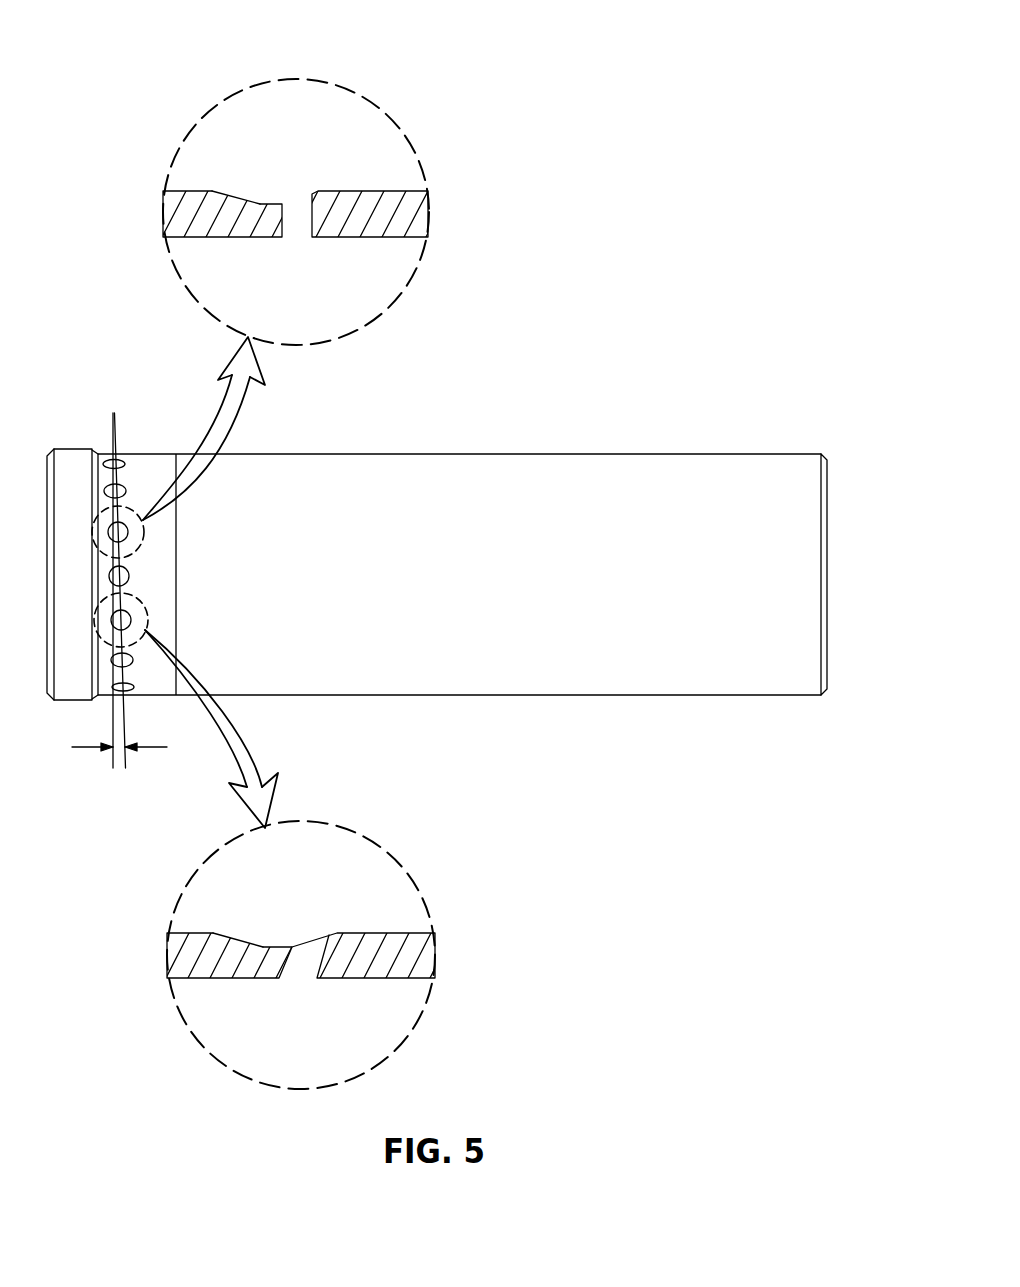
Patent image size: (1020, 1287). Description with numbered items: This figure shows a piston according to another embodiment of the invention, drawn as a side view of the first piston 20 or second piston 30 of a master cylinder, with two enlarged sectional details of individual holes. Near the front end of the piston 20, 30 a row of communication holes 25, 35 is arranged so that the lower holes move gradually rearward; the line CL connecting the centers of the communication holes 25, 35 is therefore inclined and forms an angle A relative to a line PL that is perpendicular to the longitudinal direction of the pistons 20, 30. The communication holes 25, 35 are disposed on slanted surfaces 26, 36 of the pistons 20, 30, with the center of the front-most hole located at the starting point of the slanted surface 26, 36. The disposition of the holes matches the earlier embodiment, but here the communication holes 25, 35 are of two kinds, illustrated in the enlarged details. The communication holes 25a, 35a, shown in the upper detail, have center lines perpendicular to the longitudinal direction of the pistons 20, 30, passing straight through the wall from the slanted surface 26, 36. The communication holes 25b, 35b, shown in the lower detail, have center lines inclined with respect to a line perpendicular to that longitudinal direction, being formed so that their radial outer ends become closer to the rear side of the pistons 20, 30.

The first piston 20 is at (437, 510).
The second piston 30 is at (639, 472).
The communication holes 25 is at (254, 534).
The communication holes 35 is at (125, 572).
The communication hole 25a is at (295, 176).
The communication hole 35a is at (298, 216).
The communication hole 25b is at (298, 920).
The communication hole 35b is at (310, 960).
The slanted surface 26 is at (173, 537).
The slanted surface 36 is at (275, 203).
The line perpendicular to the longitudinal direction PL is at (113, 757).
The line connecting centers of the communication holes CL is at (125, 757).
The angle A is at (119, 735).